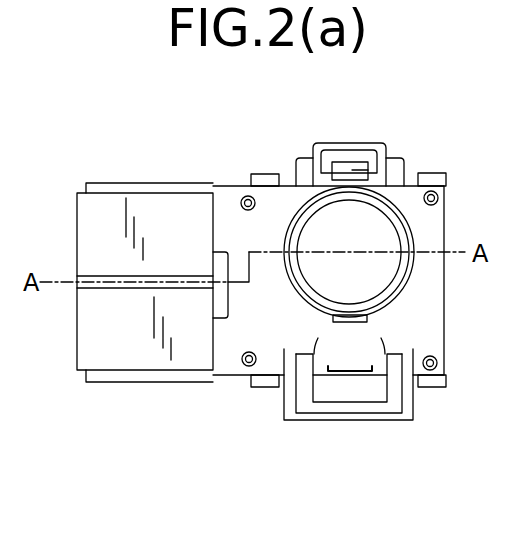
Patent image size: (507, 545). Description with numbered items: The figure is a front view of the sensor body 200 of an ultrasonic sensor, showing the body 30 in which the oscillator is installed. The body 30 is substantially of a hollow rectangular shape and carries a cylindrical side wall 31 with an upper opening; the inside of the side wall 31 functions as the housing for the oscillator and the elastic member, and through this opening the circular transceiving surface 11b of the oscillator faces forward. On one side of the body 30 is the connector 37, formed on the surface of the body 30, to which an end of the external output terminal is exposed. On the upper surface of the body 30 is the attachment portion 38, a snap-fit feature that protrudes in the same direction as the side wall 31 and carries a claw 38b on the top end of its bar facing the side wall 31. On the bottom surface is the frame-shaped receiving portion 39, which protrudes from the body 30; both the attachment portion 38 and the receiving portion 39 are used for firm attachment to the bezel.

The sensor body 200 is at (220, 407).
The body 30 is at (236, 186).
The cylindrical side wall 31 is at (407, 288).
The transceiving surface 11b is at (377, 229).
The connector 37 is at (115, 382).
The attachment portion 38 is at (350, 143).
The claw 38b is at (352, 170).
The receiving portion 39 is at (362, 421).